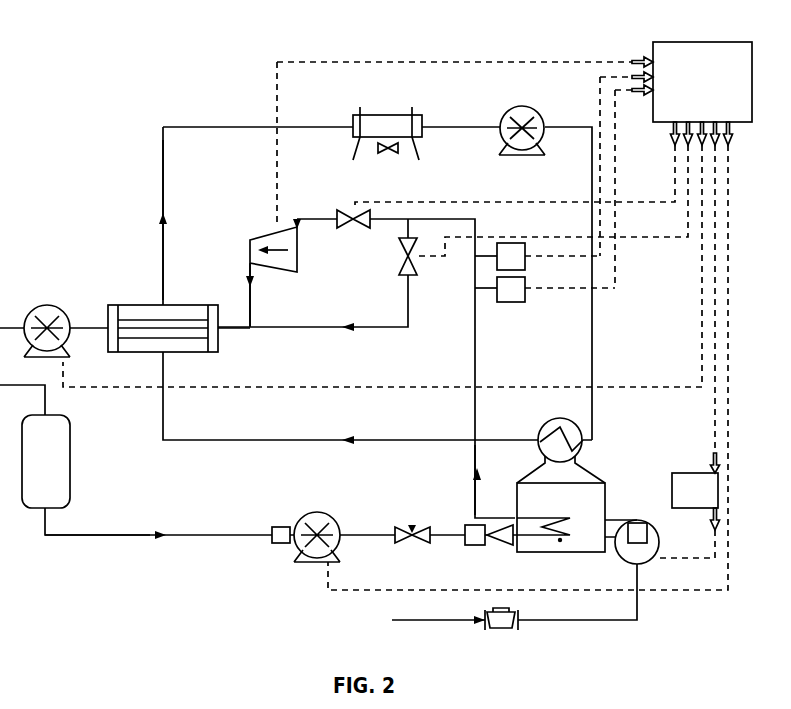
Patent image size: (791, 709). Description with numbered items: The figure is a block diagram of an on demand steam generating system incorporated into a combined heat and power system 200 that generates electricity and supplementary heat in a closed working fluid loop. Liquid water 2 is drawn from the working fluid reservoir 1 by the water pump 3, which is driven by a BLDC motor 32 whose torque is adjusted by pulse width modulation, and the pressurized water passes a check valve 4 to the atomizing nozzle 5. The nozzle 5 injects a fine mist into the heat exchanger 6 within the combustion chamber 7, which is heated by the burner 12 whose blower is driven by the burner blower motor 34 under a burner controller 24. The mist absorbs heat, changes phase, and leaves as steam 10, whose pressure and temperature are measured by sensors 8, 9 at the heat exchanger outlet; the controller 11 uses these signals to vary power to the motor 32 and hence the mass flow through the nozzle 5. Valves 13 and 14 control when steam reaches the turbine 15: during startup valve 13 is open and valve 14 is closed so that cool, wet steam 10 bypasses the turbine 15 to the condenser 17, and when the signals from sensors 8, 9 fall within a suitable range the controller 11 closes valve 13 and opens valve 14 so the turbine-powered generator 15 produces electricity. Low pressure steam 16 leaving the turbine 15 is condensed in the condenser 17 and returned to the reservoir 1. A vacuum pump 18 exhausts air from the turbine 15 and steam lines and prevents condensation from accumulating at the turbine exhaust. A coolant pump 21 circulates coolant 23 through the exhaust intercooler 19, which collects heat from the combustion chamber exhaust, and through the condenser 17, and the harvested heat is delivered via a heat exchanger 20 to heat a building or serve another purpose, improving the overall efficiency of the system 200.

The combined heat and power system 200 is at (74, 123).
The working fluid reservoir 1 is at (52, 479).
The liquid water 2 is at (160, 541).
The water pump 3 is at (320, 563).
The check valve 4 is at (414, 539).
The atomizing nozzle 5 is at (478, 545).
The heat exchanger 6 is at (560, 542).
The combustion chamber 7 is at (606, 489).
The pressure sensor 8 is at (517, 301).
The temperature sensor 9 is at (517, 268).
The steam 10 is at (470, 475).
The controller 11 is at (712, 95).
The burner 12 is at (660, 541).
The bypass valve 13 is at (400, 258).
The turbine inlet valve 14 is at (353, 226).
The steam turbine 15 is at (273, 263).
The low pressure steam 16 is at (247, 278).
The condenser 17 is at (178, 353).
The vacuum pump 18 is at (52, 358).
The exhaust intercooler 19 is at (560, 418).
The heat exchanger 20 is at (379, 150).
The coolant pump 21 is at (510, 155).
The coolant 23 is at (159, 219).
The burner controller 24 is at (707, 501).
The BLDC motor 32 is at (280, 527).
The burner blower motor 34 is at (640, 522).